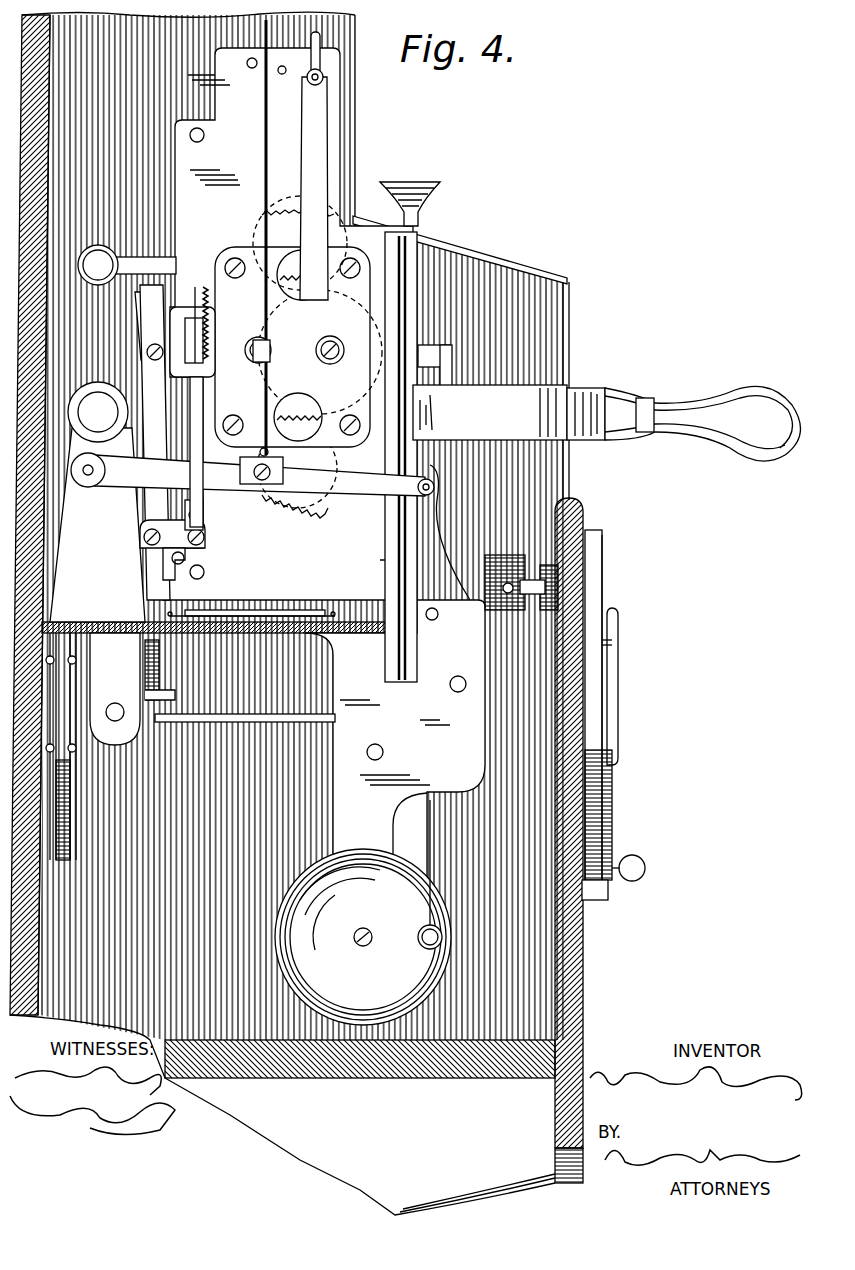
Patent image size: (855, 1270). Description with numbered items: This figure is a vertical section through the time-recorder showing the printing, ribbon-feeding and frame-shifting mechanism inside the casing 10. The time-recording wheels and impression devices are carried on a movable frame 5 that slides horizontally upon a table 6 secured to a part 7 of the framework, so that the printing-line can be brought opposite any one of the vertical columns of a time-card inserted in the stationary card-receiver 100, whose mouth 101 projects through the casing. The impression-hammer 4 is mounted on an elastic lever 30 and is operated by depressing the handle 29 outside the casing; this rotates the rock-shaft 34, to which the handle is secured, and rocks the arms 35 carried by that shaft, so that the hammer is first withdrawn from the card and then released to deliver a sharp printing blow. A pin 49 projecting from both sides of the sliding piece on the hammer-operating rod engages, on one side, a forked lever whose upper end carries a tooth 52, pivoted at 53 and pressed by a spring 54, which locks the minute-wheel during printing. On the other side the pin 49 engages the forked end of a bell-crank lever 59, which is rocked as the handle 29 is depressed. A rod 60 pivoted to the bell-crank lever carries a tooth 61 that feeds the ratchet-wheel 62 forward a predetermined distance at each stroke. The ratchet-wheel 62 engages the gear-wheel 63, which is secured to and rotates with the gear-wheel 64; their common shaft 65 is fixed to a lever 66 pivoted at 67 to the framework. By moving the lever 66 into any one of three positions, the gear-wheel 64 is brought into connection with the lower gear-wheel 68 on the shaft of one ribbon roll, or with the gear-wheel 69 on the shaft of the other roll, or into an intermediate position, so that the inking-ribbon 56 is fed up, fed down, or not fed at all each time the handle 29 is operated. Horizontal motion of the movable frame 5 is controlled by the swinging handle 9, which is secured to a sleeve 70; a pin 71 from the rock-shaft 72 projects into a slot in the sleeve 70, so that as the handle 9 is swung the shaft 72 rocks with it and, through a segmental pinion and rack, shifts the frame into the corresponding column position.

The impression-hammer 4 is at (440, 355).
The movable frame 5 is at (324, 464).
The table 6 is at (245, 628).
The framework 7 is at (120, 565).
The handle 9 is at (612, 678).
The casing 10 is at (575, 966).
The handle 29 is at (450, 500).
The lever 30 is at (452, 401).
The rock-shaft 34 is at (98, 412).
The arms 35 is at (125, 716).
The pin 49 is at (145, 688).
The tooth 52 is at (148, 256).
The pivot 53 is at (146, 352).
The spring 54 is at (140, 305).
The inking-ribbon 56 is at (405, 410).
The bell-crank lever 59 is at (186, 550).
The rod 60 is at (197, 521).
The tooth 61 is at (195, 325).
The ratchet-wheel 62 is at (210, 322).
The gear-wheel 63 is at (330, 338).
The gear-wheel 64 is at (330, 305).
The shaft 65 is at (322, 410).
The lever 66 is at (312, 170).
The pivot 67 is at (254, 345).
The gear-wheel 68 is at (298, 500).
The gear-wheel 69 is at (262, 205).
The sleeve 70 is at (525, 590).
The pin 71 is at (507, 594).
The rock-shaft 72 is at (520, 560).
The card-receiver 100 is at (408, 300).
The mouth 101 is at (420, 200).